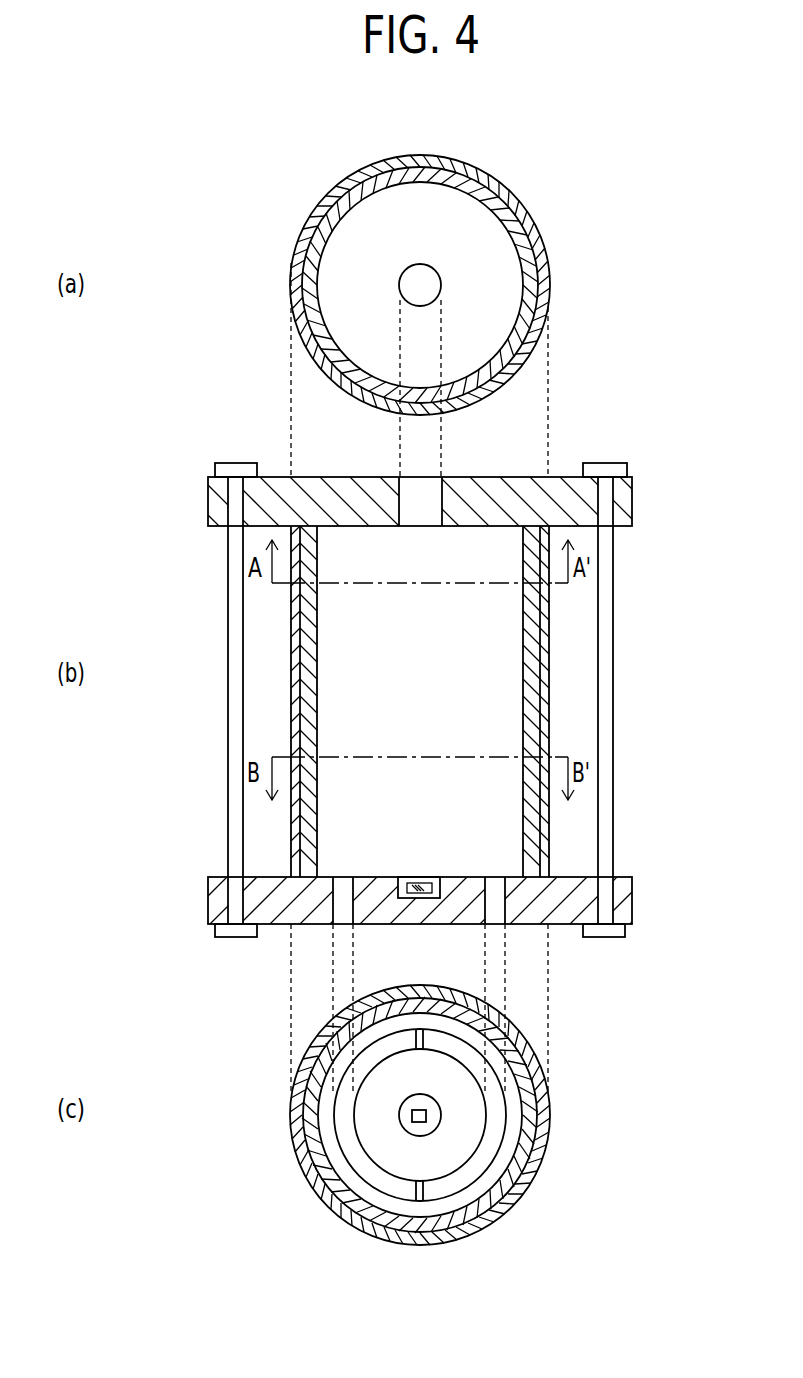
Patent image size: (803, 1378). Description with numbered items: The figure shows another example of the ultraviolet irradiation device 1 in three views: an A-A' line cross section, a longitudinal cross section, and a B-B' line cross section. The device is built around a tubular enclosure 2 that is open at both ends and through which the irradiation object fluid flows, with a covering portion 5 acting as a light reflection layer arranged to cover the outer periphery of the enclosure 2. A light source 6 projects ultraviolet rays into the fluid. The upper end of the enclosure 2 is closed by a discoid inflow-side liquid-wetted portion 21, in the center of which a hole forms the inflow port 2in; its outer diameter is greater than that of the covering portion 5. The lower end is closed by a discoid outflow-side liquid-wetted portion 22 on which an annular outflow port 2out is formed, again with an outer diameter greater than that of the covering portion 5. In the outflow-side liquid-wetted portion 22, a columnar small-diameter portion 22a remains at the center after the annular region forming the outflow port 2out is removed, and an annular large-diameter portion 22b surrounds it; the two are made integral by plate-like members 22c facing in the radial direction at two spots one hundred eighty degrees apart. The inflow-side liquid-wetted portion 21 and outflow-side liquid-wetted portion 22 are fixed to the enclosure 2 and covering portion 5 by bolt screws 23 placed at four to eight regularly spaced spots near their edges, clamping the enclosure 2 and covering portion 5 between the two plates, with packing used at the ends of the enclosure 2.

The ultraviolet irradiation device 1 is at (645, 106).
The tubular enclosure 2 is at (540, 245).
The covering portion 5 is at (523, 205).
The light source 6 is at (420, 888).
The inflow-side liquid-wetted portion 21 is at (505, 285).
The outflow-side liquid-wetted portion 22 is at (623, 908).
The columnar small-diameter portion 22a is at (467, 888).
The annular large-diameter portion 22b is at (562, 890).
The plate-like members 22c is at (432, 1037).
The bolt screws 23 is at (604, 652).
The inflow port 2in is at (399, 283).
The outflow port 2out is at (335, 912).